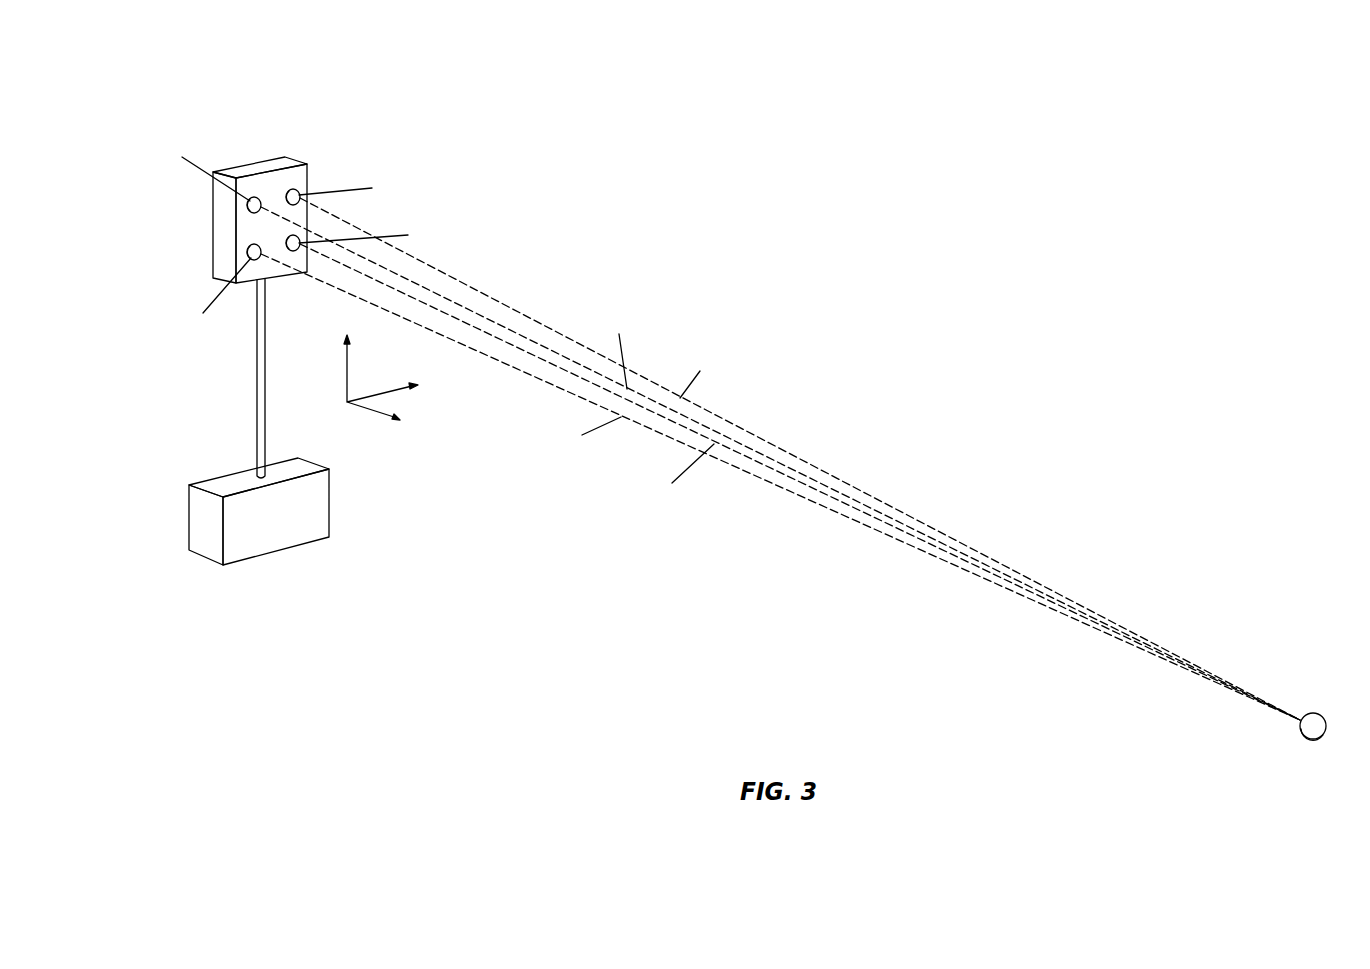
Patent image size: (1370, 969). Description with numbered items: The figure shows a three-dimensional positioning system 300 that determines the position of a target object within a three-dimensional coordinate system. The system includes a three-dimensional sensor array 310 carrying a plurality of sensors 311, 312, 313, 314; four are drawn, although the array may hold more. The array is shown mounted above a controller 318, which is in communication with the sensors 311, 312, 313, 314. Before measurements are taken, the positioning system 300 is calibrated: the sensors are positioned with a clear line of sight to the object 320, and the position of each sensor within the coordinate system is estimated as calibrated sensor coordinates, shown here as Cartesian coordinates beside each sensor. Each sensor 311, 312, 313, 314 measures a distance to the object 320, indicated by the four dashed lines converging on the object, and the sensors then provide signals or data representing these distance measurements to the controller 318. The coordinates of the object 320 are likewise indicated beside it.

The three-dimensional positioning system 300 is at (567, 136).
The 3D sensor array 310 is at (245, 164).
The sensor 311 is at (294, 189).
The sensor 312 is at (293, 251).
The sensor 313 is at (247, 249).
The sensor 314 is at (247, 211).
The controller 318 is at (272, 537).
The target object 320 is at (1307, 713).